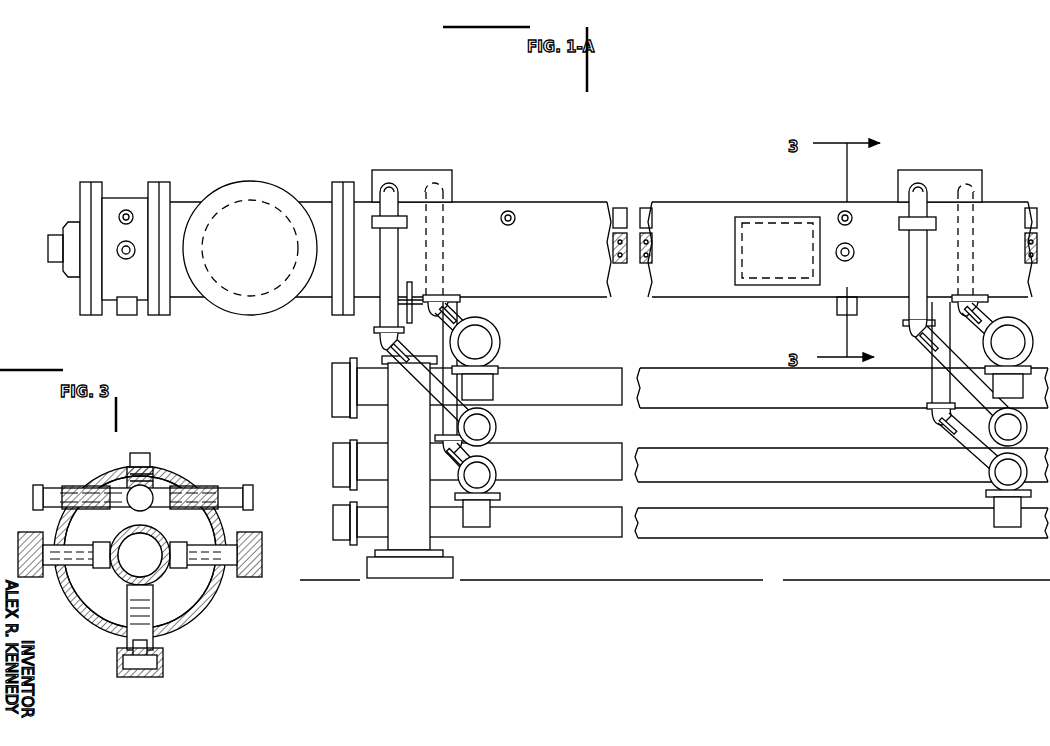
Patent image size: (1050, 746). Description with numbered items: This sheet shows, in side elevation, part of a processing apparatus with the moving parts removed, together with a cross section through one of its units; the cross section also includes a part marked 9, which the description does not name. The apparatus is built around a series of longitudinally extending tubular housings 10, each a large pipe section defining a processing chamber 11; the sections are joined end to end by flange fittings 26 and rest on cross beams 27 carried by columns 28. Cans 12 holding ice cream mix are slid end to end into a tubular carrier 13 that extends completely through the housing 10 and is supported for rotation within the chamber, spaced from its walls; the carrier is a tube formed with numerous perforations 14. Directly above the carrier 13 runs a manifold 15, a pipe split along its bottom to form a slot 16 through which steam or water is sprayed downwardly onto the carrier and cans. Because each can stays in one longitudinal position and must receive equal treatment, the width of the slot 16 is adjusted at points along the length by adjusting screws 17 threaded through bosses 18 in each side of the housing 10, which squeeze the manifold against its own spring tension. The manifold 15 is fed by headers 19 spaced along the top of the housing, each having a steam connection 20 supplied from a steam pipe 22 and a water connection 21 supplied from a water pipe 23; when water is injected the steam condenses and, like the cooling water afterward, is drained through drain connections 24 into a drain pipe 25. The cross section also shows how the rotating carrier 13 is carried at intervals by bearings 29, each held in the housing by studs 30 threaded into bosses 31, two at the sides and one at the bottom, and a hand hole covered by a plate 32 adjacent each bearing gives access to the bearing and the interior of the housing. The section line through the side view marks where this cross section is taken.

In FIG. 3, the cross bolt 9 is at (110, 535).
In FIG. 1-A, the tubular housing 10 is at (578, 212).
In FIG. 3, the tubular housing 10 is at (60, 602).
In FIG. 3, the processing chamber 11 is at (100, 618).
In FIG. 1-A, the can 12 is at (56, 237).
In FIG. 1-A, the tubular carrier 13 is at (620, 266).
In FIG. 3, the tubular carrier 13 is at (120, 576).
In FIG. 1-A, the perforations 14 is at (628, 255).
In FIG. 1-A, the manifold 15 is at (620, 208).
In FIG. 3, the manifold 15 is at (165, 468).
In FIG. 3, the slot 16 is at (152, 506).
In FIG. 1-A, the adjusting screws 17 is at (129, 211).
In FIG. 3, the adjusting screws 17 is at (112, 490).
In FIG. 1-A, the bosses 18 is at (123, 211).
In FIG. 3, the bosses 18 is at (72, 488).
In FIG. 1-A, the header 19 is at (408, 178).
In FIG. 1-A, the steam connection 20 is at (440, 166).
In FIG. 1-A, the water connection 21 is at (386, 176).
In FIG. 1-A, the steam pipe 22 is at (565, 385).
In FIG. 1-A, the water pipe 23 is at (555, 463).
In FIG. 1-A, the drain connection 24 is at (455, 304).
In FIG. 1-A, the drain pipe 25 is at (548, 527).
In FIG. 1-A, the flange fitting 26 is at (258, 192).
In FIG. 1-A, the cross beam 27 is at (378, 328).
In FIG. 1-A, the column 28 is at (390, 423).
In FIG. 3, the bearing 29 is at (125, 585).
In FIG. 3, the stud 30 is at (222, 537).
In FIG. 1-A, the boss 31 is at (127, 259).
In FIG. 3, the boss 31 is at (48, 574).
In FIG. 1-A, the plate 32 is at (766, 230).